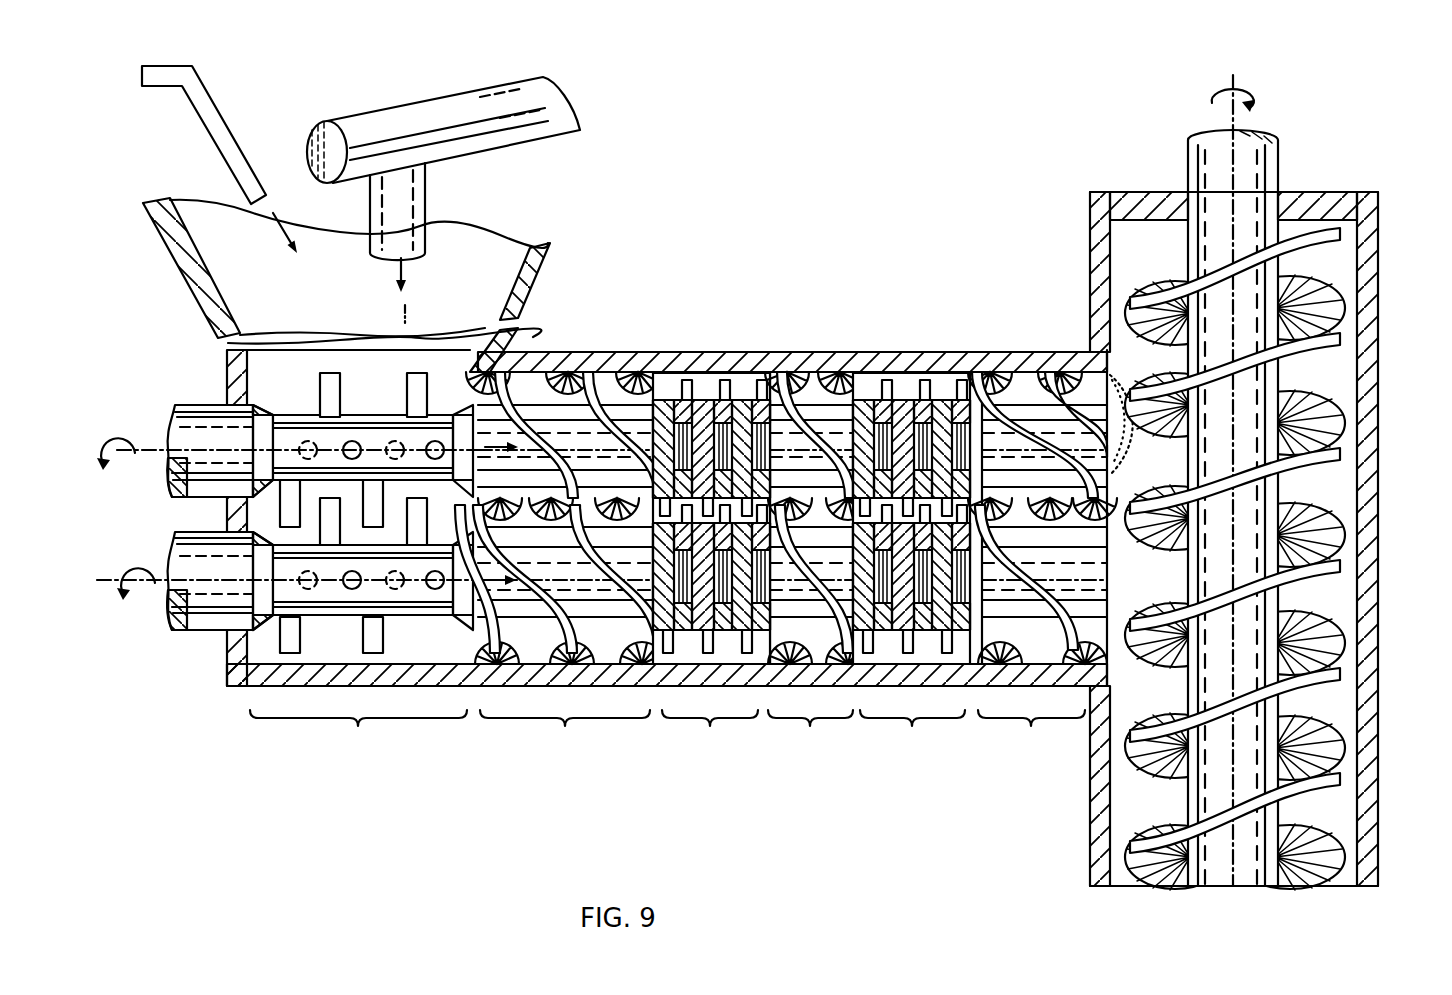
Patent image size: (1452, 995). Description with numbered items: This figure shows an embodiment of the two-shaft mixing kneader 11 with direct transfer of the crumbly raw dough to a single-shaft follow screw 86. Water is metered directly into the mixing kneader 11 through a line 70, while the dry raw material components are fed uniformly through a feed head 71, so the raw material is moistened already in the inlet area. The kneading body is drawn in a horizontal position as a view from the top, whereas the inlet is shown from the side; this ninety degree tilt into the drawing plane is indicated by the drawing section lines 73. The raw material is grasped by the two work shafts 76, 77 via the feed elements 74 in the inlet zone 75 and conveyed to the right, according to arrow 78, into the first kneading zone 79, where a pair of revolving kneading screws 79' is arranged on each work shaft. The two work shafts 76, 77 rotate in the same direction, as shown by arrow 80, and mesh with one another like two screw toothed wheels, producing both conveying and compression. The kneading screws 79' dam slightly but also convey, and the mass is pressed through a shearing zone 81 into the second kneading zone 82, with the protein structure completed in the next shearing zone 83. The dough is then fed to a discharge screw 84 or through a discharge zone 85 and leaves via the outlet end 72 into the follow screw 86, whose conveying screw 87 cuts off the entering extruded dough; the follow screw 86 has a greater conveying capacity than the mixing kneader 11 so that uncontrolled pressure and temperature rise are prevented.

The mixing kneader 11 is at (543, 352).
The line 70 is at (220, 102).
The feed head 71 is at (481, 149).
The outlet end 72 is at (1093, 350).
The drawing section lines 73 is at (217, 336).
The feed elements 74 is at (385, 652).
The inlet zone 75 is at (358, 736).
The work shaft 76 is at (187, 407).
The work shaft 77 is at (207, 605).
The arrow 78 is at (470, 415).
The first kneading zone 79 is at (560, 567).
The kneading screws 79' is at (607, 667).
The arrow 80 is at (279, 519).
The shearing zone 81 is at (711, 568).
The second kneading zone 82 is at (817, 567).
The shearing zone 83 is at (911, 568).
The discharge screw 84 is at (996, 650).
The discharge zone 85 is at (1042, 567).
The follow screw 86 is at (1378, 303).
The conveying screw 87 is at (1337, 412).